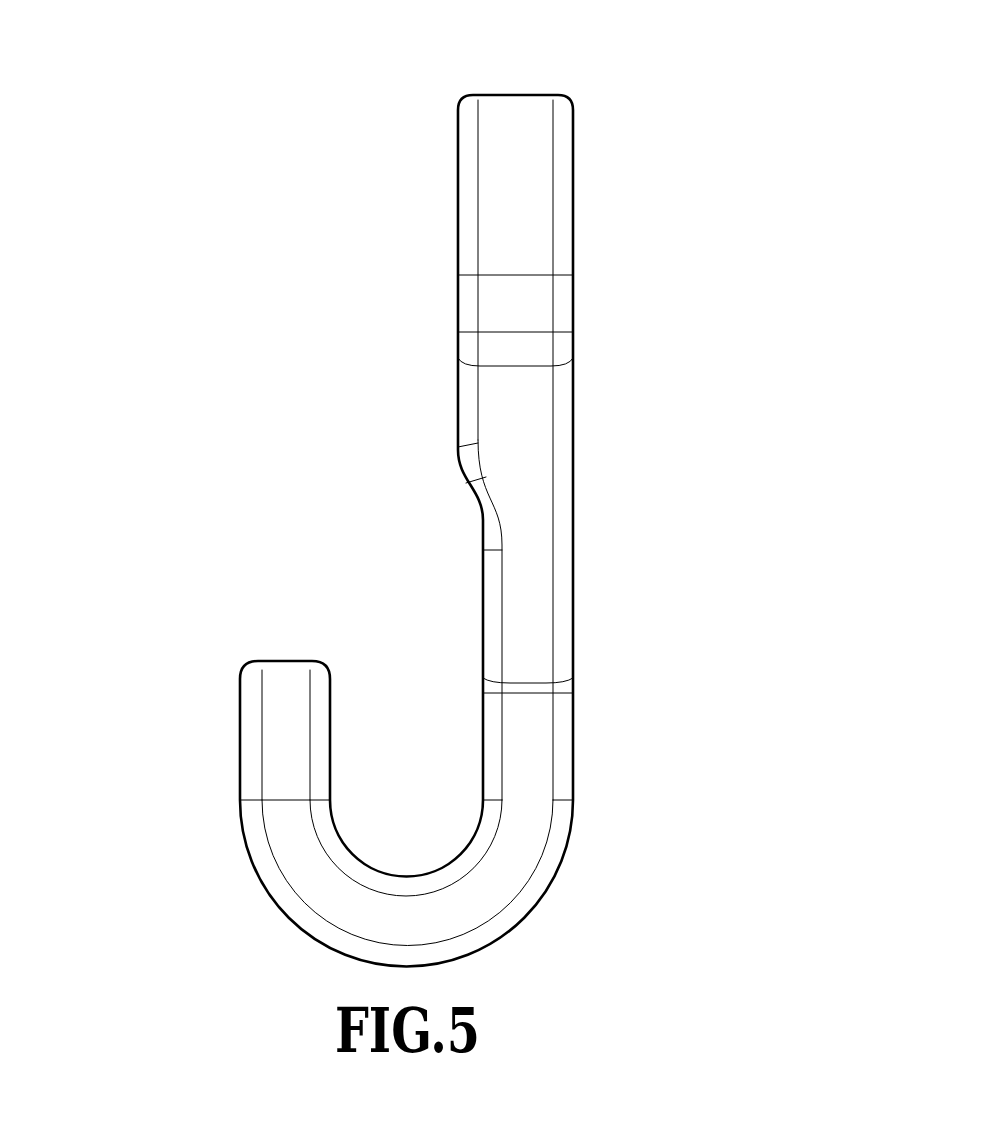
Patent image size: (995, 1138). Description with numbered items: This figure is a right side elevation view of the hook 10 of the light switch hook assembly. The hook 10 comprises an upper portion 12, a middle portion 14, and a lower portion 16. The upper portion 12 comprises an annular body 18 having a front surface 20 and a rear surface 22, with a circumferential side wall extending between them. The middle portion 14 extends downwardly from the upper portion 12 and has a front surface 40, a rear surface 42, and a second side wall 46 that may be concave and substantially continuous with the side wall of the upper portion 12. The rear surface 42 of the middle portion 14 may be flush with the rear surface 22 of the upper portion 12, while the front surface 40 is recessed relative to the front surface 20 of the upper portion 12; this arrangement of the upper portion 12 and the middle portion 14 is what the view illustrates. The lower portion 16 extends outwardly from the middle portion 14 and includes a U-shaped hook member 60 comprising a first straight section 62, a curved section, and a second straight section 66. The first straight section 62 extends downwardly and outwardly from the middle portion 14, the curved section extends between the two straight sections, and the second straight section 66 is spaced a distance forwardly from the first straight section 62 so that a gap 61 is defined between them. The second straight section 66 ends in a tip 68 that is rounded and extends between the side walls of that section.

The hook 10 is at (646, 127).
The upper portion 12 is at (437, 242).
The middle portion 14 is at (443, 508).
The lower portion 16 is at (215, 778).
The annular body 18 is at (522, 94).
The front surface 20 is at (458, 193).
The rear surface 22 is at (573, 200).
The front surface 40 is at (483, 522).
The rear surface 42 is at (573, 532).
The second side wall 46 is at (527, 582).
The first straight section 62 is at (537, 743).
The gap 61 is at (402, 834).
The U-shaped hook member 60 is at (307, 931).
The second straight section 66 is at (240, 722).
The tip 68 is at (285, 661).